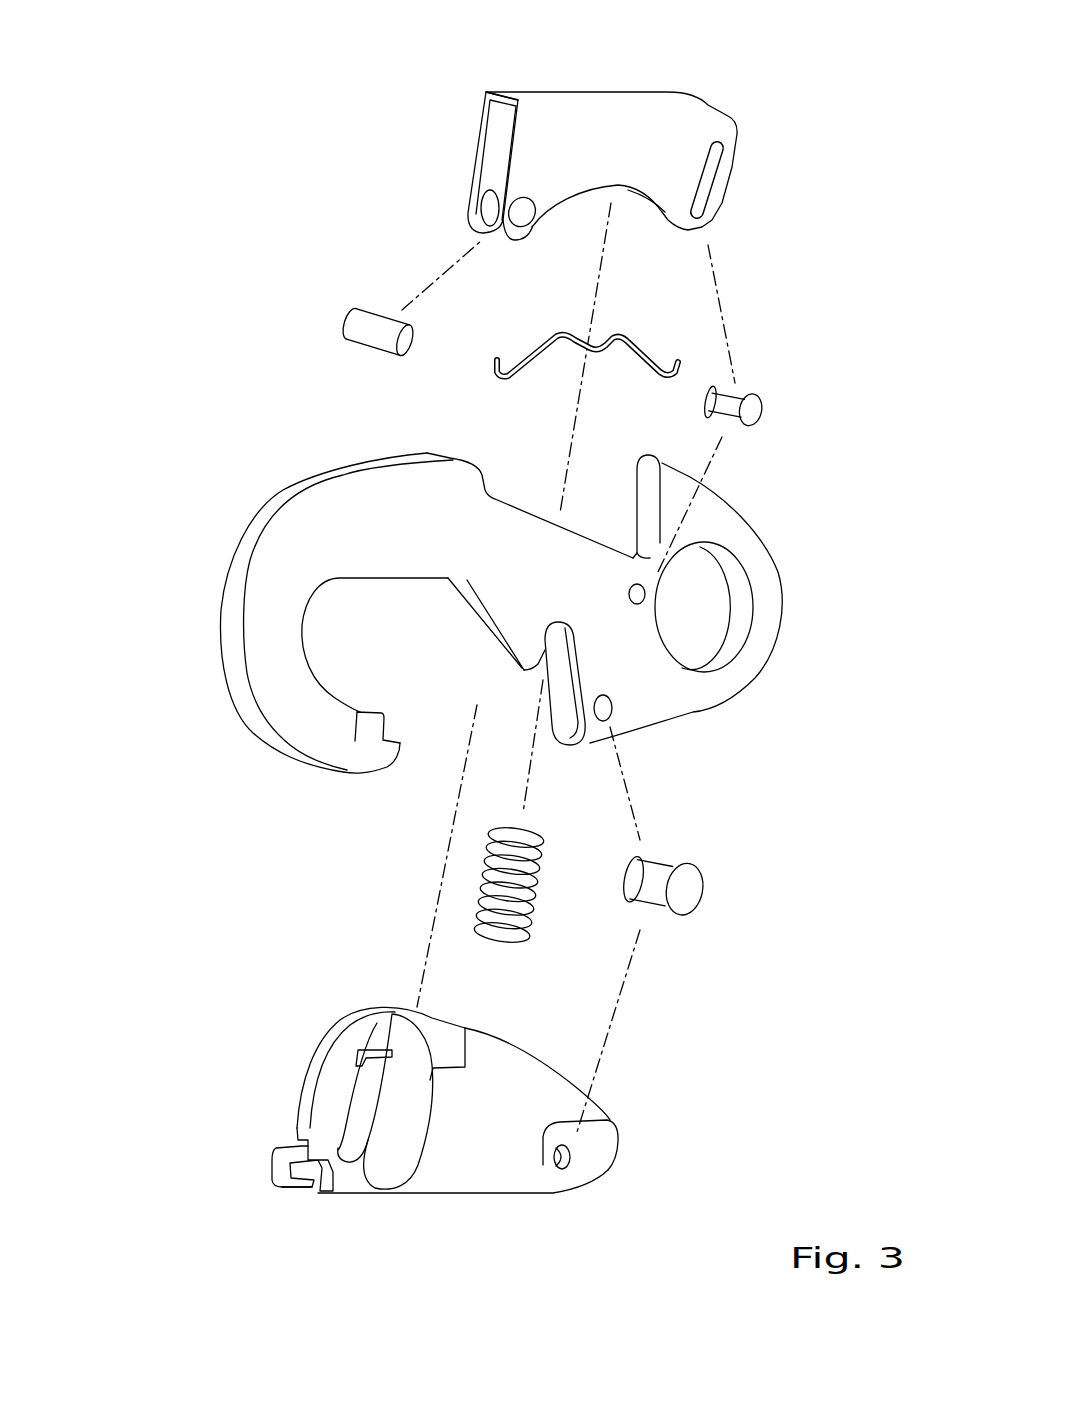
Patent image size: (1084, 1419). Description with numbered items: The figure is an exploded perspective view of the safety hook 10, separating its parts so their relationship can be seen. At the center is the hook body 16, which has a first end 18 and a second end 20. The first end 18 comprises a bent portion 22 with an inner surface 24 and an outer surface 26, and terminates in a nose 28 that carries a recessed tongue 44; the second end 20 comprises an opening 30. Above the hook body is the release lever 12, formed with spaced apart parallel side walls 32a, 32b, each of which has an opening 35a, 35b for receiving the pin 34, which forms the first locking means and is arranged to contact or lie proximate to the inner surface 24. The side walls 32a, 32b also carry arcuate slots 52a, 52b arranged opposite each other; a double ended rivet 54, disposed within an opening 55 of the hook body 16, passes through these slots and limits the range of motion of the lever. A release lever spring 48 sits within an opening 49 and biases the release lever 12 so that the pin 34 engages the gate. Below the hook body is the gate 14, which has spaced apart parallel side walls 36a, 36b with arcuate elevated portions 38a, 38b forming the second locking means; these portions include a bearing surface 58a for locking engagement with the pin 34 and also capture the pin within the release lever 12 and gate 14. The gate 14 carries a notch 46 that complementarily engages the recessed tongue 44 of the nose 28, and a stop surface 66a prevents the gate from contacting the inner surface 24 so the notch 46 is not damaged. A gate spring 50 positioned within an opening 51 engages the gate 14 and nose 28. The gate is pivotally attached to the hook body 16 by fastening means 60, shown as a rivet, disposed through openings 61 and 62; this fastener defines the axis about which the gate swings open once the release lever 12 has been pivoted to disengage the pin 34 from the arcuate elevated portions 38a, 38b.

The safety hook 10 is at (190, 160).
The release lever 12 is at (638, 77).
The gate 14 is at (452, 1209).
The hook body 16 is at (702, 735).
The first end 18 is at (195, 666).
The second end 20 is at (793, 567).
The bent portion 22 is at (258, 630).
The inner surface 24 is at (478, 612).
The outer surface 26 is at (343, 471).
The nose 28 is at (390, 788).
The opening 30 is at (700, 622).
The side wall 32a is at (472, 112).
The side wall 32b is at (520, 155).
The pin 34 is at (363, 325).
The opening 35a is at (488, 205).
The opening 35b is at (522, 215).
The side wall 36a is at (357, 1110).
The side wall 36b is at (483, 1163).
The arcuate elevated portion 38a is at (350, 1033).
The arcuate elevated portion 38b is at (388, 1175).
The recessed tongue 44 is at (372, 732).
The notch 46 is at (292, 1197).
The release lever spring 48 is at (538, 352).
The opening 49 is at (607, 500).
The gate spring 50 is at (523, 892).
The opening 51 is at (553, 660).
The arcuate slot 52a is at (650, 222).
The arcuate slot 52b is at (708, 173).
The double ended rivet 54 is at (753, 408).
The opening 55 is at (637, 605).
The bearing surface 58a is at (392, 1050).
The fastening means 60 is at (688, 893).
The opening 61 is at (607, 714).
The opening 62 is at (565, 1160).
The stop surface 66a is at (338, 1157).